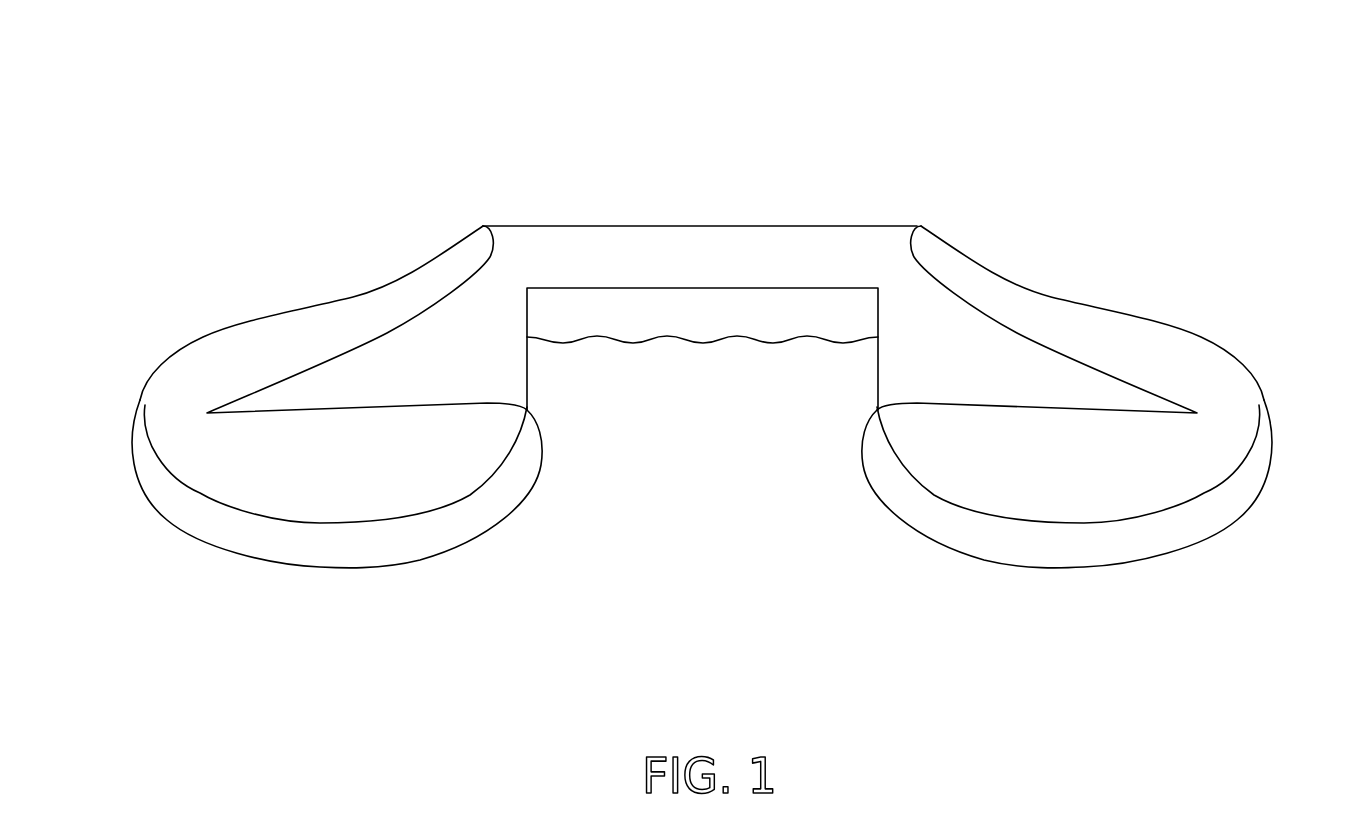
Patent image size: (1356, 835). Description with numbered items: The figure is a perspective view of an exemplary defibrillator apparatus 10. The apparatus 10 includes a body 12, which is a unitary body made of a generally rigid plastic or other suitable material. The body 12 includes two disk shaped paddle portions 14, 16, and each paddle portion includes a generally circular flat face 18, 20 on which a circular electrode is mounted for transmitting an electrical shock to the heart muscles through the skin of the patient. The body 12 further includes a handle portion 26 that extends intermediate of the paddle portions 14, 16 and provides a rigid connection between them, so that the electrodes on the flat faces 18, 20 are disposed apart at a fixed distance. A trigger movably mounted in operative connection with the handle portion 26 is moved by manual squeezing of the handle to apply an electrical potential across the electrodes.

The defibrillator apparatus 10 is at (993, 125).
The body 12 is at (917, 224).
The paddle portion 14 is at (178, 363).
The paddle portion 16 is at (1225, 407).
The flat face 18 is at (213, 565).
The flat face 20 is at (1013, 550).
The handle portion 26 is at (510, 226).